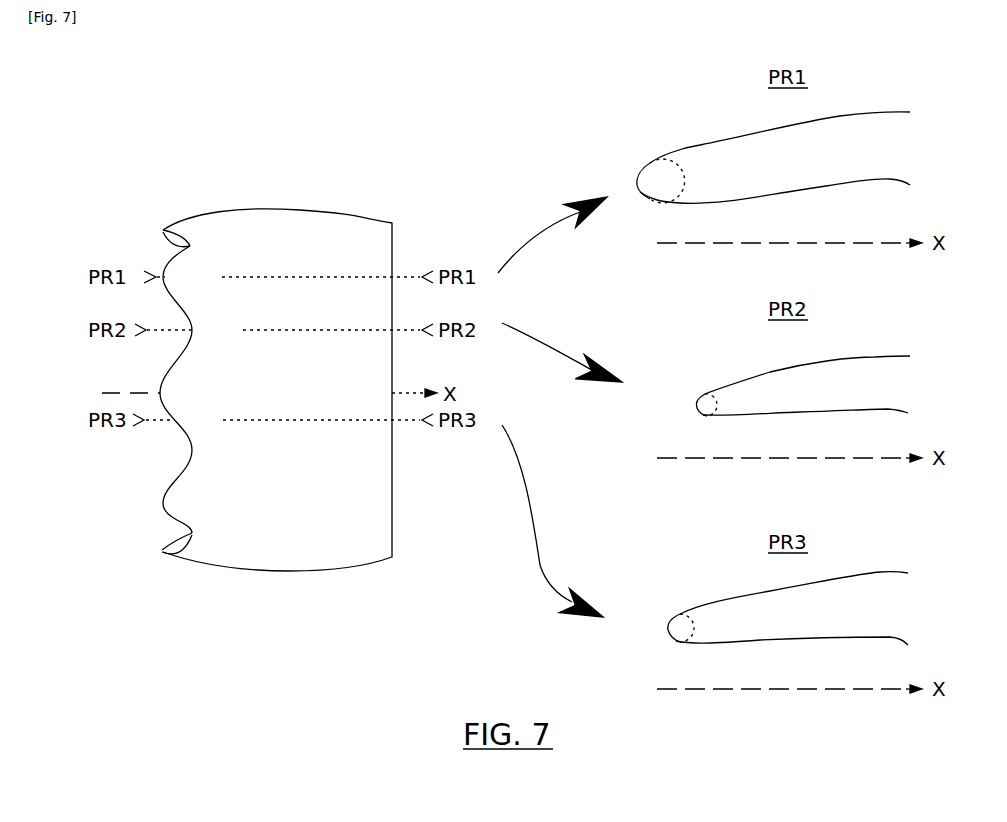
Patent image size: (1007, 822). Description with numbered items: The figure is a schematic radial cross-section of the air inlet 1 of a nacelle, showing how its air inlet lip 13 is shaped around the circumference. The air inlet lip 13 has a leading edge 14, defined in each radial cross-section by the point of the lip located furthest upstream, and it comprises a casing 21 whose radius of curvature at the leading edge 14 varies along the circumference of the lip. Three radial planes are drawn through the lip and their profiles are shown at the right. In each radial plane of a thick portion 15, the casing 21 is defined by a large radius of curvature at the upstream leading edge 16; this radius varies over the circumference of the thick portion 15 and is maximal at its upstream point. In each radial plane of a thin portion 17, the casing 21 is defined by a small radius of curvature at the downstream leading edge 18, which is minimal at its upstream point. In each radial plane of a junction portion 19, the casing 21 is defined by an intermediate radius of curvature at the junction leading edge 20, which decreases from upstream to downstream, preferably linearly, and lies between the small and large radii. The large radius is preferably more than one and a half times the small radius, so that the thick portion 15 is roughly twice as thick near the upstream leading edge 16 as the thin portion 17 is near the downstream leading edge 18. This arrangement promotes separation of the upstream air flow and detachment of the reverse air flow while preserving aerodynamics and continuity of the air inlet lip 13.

The air inlet 1 is at (352, 192).
The air inlet lip 13 is at (102, 206).
The leading edge 14 is at (158, 553).
The thick portion 15 is at (209, 288).
The upstream leading edge 16 is at (636, 185).
The thin portion 17 is at (232, 340).
The downstream leading edge 18 is at (696, 406).
The junction portion 19 is at (217, 430).
The junction leading edge 20 is at (667, 630).
The casing 21 is at (870, 110).